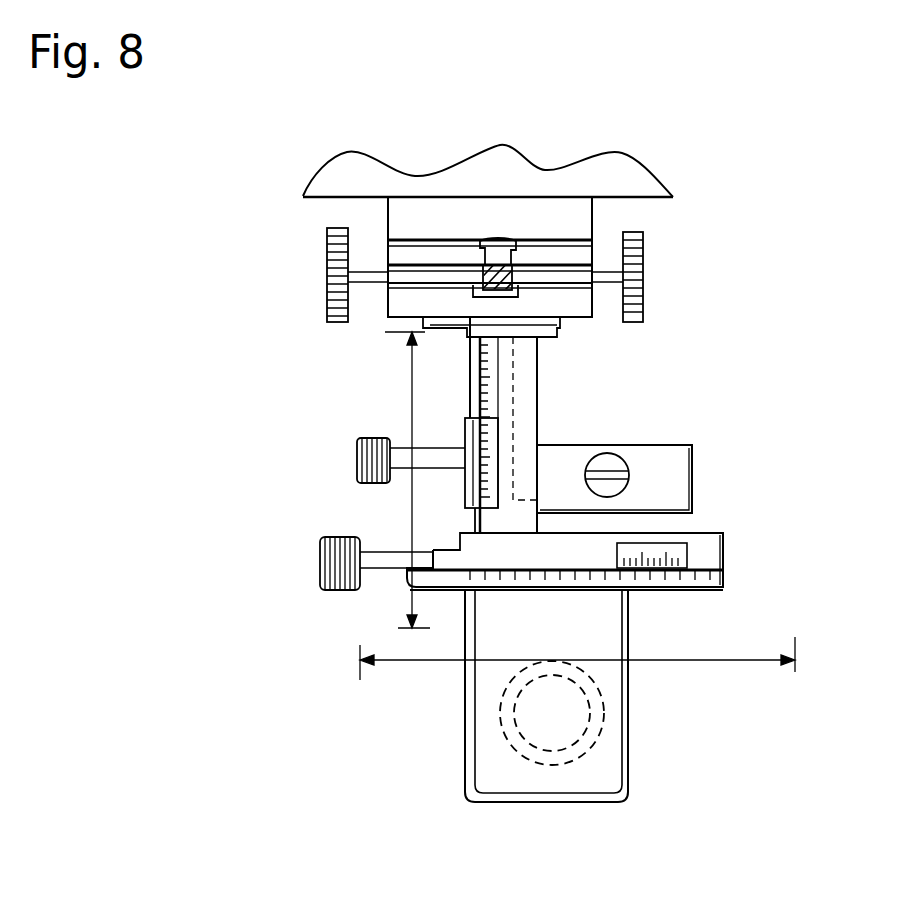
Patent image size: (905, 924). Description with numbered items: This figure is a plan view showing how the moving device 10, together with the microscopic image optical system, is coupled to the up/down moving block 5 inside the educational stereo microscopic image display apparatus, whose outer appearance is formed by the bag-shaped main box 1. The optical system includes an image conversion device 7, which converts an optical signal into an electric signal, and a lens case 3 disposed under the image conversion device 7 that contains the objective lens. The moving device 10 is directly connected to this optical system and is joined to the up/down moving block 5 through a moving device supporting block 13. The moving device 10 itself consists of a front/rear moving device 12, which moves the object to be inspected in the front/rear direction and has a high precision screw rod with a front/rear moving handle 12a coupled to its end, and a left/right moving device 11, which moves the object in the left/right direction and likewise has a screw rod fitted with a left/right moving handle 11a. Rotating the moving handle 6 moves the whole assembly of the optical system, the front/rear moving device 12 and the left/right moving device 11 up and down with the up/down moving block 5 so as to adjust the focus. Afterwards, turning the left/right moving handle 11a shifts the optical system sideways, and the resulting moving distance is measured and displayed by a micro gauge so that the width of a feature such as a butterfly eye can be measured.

The main box 1 is at (628, 175).
The lens case 3 is at (545, 717).
The up/down moving block 5 is at (572, 303).
The moving handle 6 is at (645, 288).
The image conversion device 7 is at (600, 777).
The moving device 10 is at (517, 467).
The left/right moving device 11 is at (725, 567).
The left/right moving handle 11a is at (320, 567).
The front/rear moving device 12 is at (490, 400).
The front/rear moving handle 12a is at (357, 457).
The moving device supporting block 13 is at (680, 483).